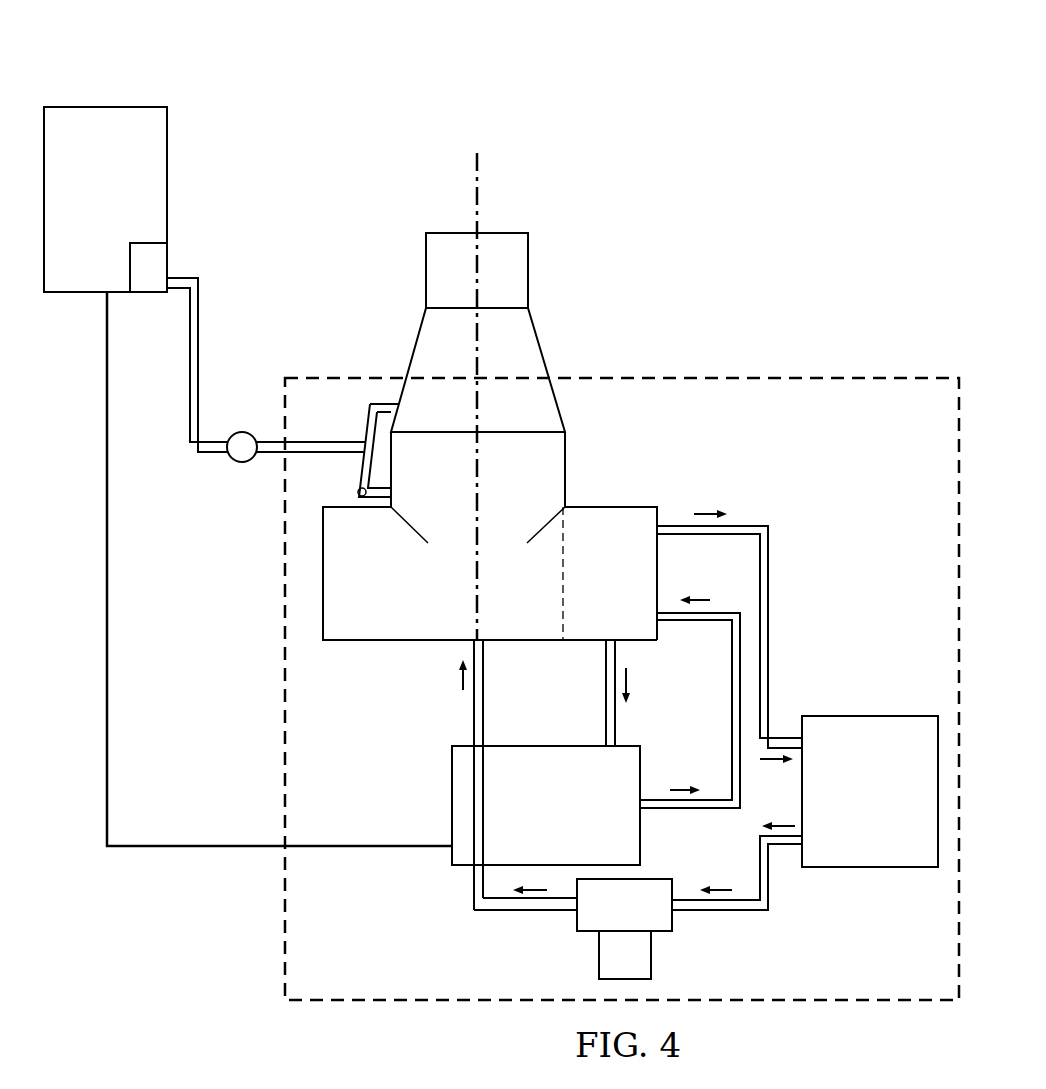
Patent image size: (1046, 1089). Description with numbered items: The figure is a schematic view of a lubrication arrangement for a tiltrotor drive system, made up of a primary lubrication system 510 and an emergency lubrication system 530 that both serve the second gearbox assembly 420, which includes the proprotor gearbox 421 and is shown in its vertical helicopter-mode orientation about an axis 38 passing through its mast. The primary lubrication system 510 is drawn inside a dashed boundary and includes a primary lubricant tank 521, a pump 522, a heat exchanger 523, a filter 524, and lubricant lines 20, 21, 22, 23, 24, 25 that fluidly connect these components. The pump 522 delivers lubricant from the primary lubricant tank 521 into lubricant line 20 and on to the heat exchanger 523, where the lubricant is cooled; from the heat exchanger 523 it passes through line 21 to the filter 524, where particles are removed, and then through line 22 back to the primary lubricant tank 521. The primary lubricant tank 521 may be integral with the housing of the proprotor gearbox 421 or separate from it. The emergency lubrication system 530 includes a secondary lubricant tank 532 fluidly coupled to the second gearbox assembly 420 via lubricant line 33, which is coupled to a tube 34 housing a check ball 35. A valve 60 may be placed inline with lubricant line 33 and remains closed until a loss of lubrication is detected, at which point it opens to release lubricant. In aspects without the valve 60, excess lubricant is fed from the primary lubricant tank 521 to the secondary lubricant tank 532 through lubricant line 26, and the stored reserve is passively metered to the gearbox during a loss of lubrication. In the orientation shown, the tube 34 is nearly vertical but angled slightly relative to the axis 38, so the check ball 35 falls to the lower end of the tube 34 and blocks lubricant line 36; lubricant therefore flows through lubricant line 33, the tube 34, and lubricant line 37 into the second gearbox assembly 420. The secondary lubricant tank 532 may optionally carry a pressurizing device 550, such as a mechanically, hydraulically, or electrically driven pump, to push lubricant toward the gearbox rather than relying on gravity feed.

The emergency lubrication system 530 is at (96, 67).
The secondary lubricant tank 532 is at (168, 200).
The pressurizing device 550 is at (128, 266).
The lubricant line 33 is at (189, 395).
The valve 60 is at (243, 462).
The lubricant line 26 is at (195, 848).
The primary lubrication system 510 is at (885, 562).
The axis 38 is at (480, 190).
The second gearbox assembly 420 is at (549, 265).
The proprotor gearbox 421 is at (413, 481).
The pump 522 is at (612, 506).
The lubricant line 37 is at (376, 404).
The tube 34 is at (368, 427).
The check ball 35 is at (358, 490).
The lubricant line 36 is at (381, 508).
The lubricant line 20 is at (770, 632).
The lubricant line 24 is at (690, 810).
The lubricant line 25 is at (604, 677).
The lubricant line 23 is at (472, 723).
The lubricant line 22 is at (472, 884).
The primary lubricant tank 521 is at (544, 746).
The filter 524 is at (598, 958).
The lubricant line 21 is at (718, 912).
The heat exchanger 523 is at (868, 868).